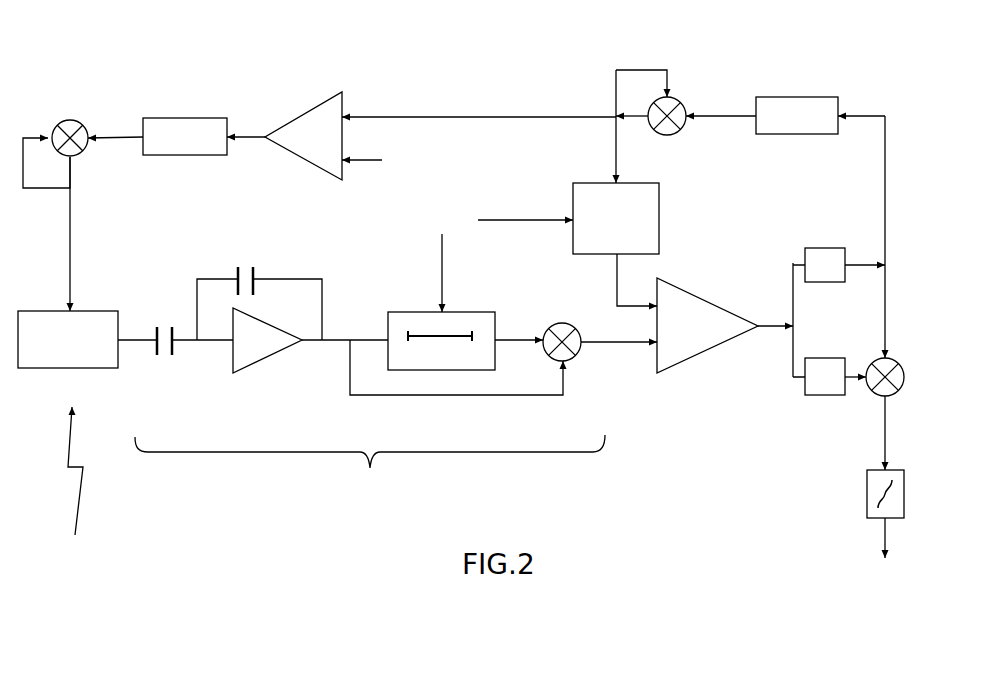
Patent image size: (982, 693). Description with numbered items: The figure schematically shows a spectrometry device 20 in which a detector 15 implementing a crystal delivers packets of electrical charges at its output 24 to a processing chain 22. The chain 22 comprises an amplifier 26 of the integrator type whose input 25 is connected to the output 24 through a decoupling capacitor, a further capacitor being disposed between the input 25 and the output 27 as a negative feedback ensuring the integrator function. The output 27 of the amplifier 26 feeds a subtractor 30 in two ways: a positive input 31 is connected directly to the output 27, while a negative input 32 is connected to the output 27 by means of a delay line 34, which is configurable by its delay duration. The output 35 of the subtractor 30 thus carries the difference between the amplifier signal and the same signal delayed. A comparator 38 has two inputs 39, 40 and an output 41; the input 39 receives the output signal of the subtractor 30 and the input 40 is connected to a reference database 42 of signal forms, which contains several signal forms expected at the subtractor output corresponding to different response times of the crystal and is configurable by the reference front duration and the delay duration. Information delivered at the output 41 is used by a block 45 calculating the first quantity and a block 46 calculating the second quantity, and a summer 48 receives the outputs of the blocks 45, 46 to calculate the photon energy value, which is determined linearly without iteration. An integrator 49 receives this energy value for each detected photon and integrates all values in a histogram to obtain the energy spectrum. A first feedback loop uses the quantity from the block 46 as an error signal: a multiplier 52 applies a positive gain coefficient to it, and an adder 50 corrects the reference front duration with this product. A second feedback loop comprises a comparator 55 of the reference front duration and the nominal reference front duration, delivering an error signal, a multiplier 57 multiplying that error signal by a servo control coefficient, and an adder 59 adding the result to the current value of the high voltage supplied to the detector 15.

The detector 15 is at (67, 369).
The spectrometry device 20 is at (287, 500).
The processing chain 22 is at (370, 467).
The output of the detector 24 is at (128, 342).
The input of the amplifier 25 is at (210, 342).
The amplifier 26 is at (258, 366).
The output of the amplifier 27 is at (312, 343).
The subtractor 30 is at (560, 323).
The positive input of the subtractor 31 is at (510, 396).
The negative input of the subtractor 32 is at (507, 340).
The delay line 34 is at (405, 312).
The output of the subtractor 35 is at (585, 343).
The comparator 38 is at (710, 351).
The first input of the comparator 39 is at (645, 343).
The second input of the comparator 40 is at (636, 305).
The output of the comparator 41 is at (772, 323).
The reference database 42 is at (660, 216).
The block 45 is at (823, 358).
The block 46 is at (827, 248).
The summer 48 is at (870, 391).
The integrator 49 is at (867, 495).
The adder 50 is at (673, 133).
The multiplier 52 is at (793, 97).
The comparator 55 is at (320, 100).
The multiplier 57 is at (175, 118).
The adder 59 is at (65, 120).